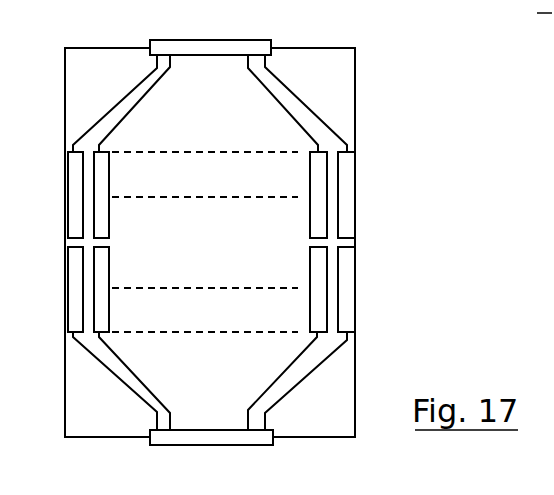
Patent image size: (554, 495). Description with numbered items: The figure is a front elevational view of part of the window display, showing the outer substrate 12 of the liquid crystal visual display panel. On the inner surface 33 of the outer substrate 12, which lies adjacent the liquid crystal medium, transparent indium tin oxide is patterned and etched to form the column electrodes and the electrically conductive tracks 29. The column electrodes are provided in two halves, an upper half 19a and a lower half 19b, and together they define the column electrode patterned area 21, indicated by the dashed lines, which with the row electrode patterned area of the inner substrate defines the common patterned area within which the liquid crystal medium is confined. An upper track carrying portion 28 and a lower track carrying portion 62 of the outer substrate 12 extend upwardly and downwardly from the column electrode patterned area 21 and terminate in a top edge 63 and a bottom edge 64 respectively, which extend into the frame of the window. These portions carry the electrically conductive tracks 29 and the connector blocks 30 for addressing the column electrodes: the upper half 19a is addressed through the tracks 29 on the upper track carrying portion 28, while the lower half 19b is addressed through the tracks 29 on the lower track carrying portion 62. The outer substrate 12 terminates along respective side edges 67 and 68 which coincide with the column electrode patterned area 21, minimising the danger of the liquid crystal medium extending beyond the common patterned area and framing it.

The outer substrate 12 is at (82, 407).
The upper half of the column electrodes 19a is at (347, 182).
The lower half of the column electrodes 19b is at (347, 292).
The column electrode patterned area 21 is at (197, 333).
The upper track carrying portion 28 is at (337, 86).
The electrically conductive tracks 29 is at (132, 118).
The connector blocks 30 is at (202, 45).
The inner surface 33 is at (215, 415).
The lower track carrying portion 62 is at (345, 387).
The top edge 63 is at (310, 46).
The bottom edge 64 is at (317, 438).
The side edge 67 is at (66, 205).
The side edge 68 is at (355, 208).